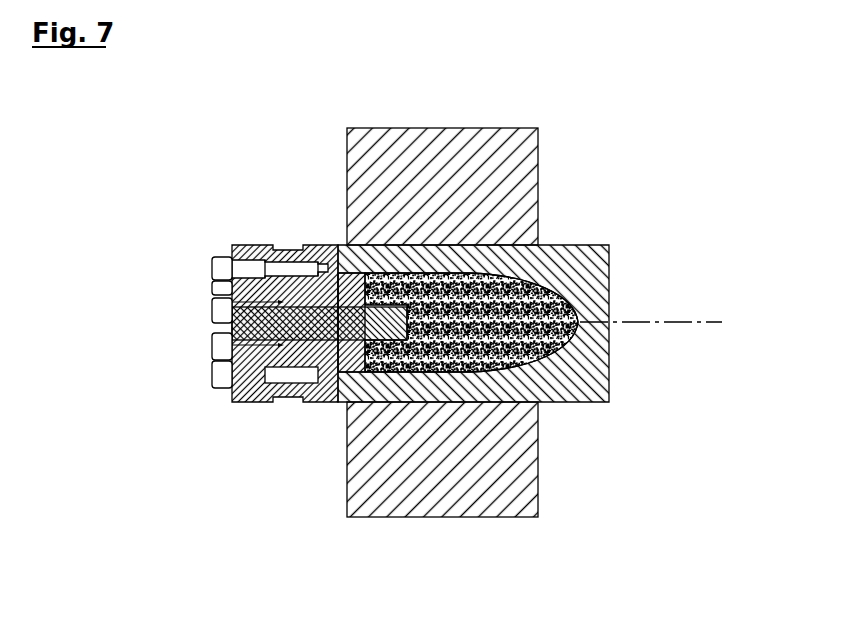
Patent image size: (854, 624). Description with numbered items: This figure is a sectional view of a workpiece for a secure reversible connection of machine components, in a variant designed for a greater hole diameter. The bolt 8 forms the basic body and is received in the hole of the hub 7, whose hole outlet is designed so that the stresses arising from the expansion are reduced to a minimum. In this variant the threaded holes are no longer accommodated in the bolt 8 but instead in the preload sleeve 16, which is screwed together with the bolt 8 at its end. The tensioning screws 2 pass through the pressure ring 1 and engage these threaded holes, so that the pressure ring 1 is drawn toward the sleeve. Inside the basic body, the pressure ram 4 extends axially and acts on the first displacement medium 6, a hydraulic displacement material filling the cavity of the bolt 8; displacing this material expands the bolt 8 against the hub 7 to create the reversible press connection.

The pressure ring 1 is at (252, 393).
The tensioning screw 2 is at (228, 275).
The pressure ram 4 is at (358, 323).
The first displacement medium, hydraulic displacement material 6 is at (505, 277).
The hub 7 is at (535, 166).
The bolt, basic body 8 is at (585, 260).
The preload sleeve 16 is at (323, 260).